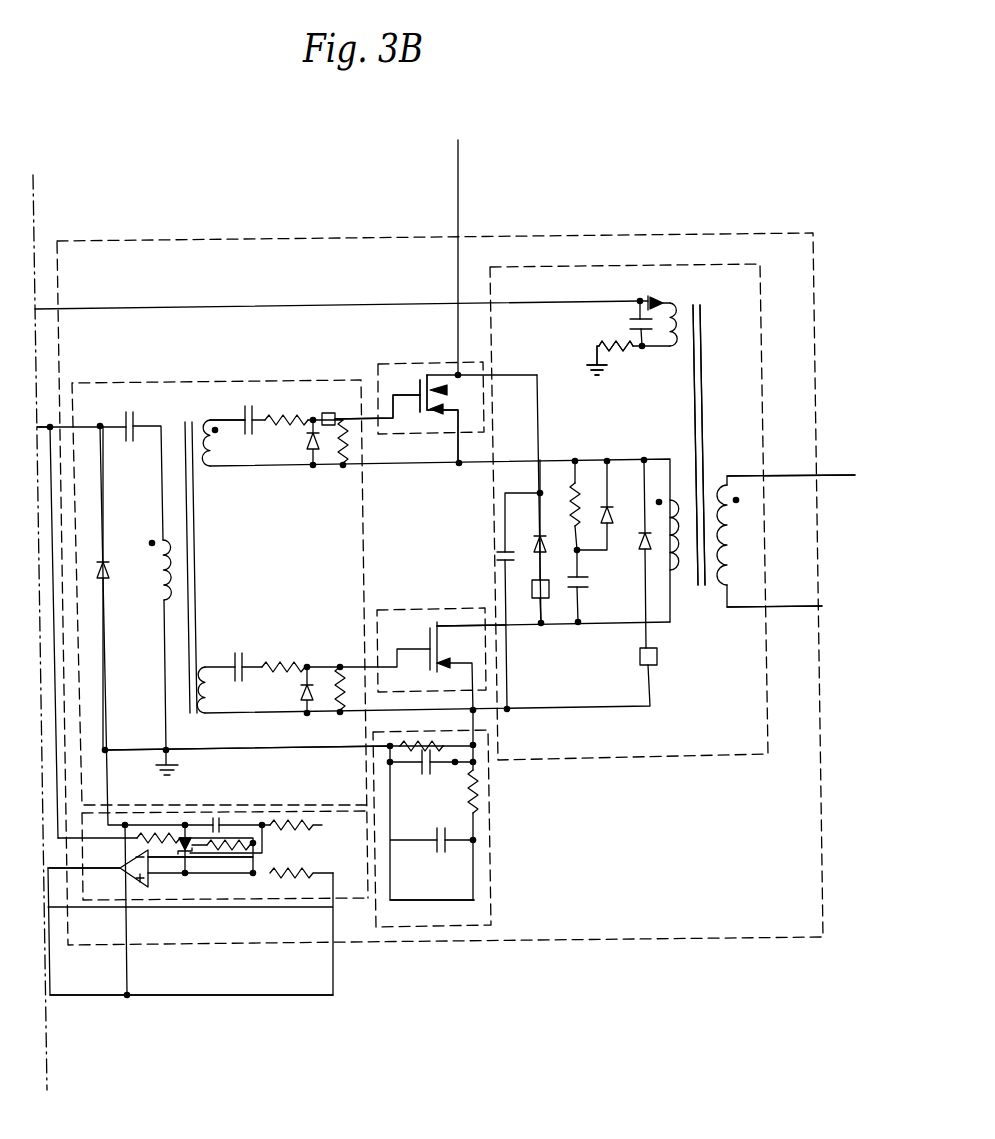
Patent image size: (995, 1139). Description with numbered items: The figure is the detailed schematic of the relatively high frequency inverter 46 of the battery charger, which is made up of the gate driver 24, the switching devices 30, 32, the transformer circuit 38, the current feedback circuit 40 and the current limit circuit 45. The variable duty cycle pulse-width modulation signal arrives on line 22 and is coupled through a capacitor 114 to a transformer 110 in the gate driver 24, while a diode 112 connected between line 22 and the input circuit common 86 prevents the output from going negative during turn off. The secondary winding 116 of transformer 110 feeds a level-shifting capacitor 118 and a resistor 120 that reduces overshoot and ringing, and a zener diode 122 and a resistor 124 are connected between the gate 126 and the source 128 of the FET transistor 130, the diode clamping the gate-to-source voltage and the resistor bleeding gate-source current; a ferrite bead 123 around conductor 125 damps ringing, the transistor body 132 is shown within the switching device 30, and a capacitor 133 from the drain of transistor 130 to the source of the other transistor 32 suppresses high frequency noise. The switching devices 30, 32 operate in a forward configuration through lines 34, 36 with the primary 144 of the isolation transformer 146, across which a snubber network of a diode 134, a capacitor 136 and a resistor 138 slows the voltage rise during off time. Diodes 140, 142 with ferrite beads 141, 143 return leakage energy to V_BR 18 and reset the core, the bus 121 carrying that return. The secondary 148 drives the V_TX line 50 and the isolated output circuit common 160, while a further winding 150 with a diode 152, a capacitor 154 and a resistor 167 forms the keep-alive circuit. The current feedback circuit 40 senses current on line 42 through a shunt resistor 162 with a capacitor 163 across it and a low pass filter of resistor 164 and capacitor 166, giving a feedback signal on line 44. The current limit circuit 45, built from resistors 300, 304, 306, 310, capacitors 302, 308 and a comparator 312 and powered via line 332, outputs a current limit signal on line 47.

The V_BR supply 18 is at (458, 206).
The pulse-width modulation signal line 22 is at (47, 427).
The gate driver 24 is at (232, 383).
The switching device 30 is at (432, 432).
The switching device 32 is at (457, 608).
The line 34 is at (483, 373).
The line 36 is at (596, 350).
The transformer circuit 38 is at (660, 757).
The current feedback circuit 40 is at (490, 878).
The line 42 is at (477, 742).
The current feedback signal line 44 is at (465, 900).
The current limit circuit 45 is at (265, 900).
The inverter 46 is at (172, 945).
The current limit signal line 47 is at (60, 868).
The V_TX line 50 is at (790, 476).
The input circuit common 86 is at (310, 750).
The transformer 110 is at (199, 545).
The diode 112 is at (104, 577).
The capacitor 114 is at (133, 413).
The secondary winding 116 is at (220, 449).
The capacitor 118 is at (257, 413).
The resistor 120 is at (250, 437).
The supply line 121 is at (100, 309).
The zener diode 122 is at (308, 446).
The ferrite bead 123 is at (324, 413).
The resistor 124 is at (343, 462).
The conductor 125 is at (329, 410).
The gate 126 is at (402, 393).
The source 128 is at (452, 413).
The FET transistor 130 is at (448, 389).
The transistor body 132 is at (448, 374).
The capacitor 133 is at (450, 467).
The diode 134 is at (606, 505).
The capacitor 136 is at (586, 589).
The resistor 138 is at (573, 482).
The diode 140 is at (535, 537).
The ferrite bead 141 is at (531, 598).
The diode 142 is at (660, 462).
The ferrite bead 143 is at (658, 658).
The primary 144 is at (687, 572).
The isolation transformer 146 is at (705, 443).
The secondary 148 is at (735, 566).
The winding 150 is at (681, 297).
The diode 152 is at (655, 296).
The capacitor 154 is at (633, 316).
The isolated output circuit common 160 is at (800, 607).
The shunt resistor 162 is at (400, 744).
The capacitor 163 is at (416, 765).
The resistor 164 is at (479, 805).
The capacitor 166 is at (445, 847).
The resistor 167 is at (628, 348).
The resistor 300 is at (322, 825).
The capacitor 302 is at (220, 825).
The resistor 304 is at (152, 835).
The resistor 306 is at (256, 850).
The capacitor 308 is at (192, 858).
The resistor 310 is at (328, 865).
The integrated circuit comparator 312 is at (150, 880).
The line 332 is at (110, 998).